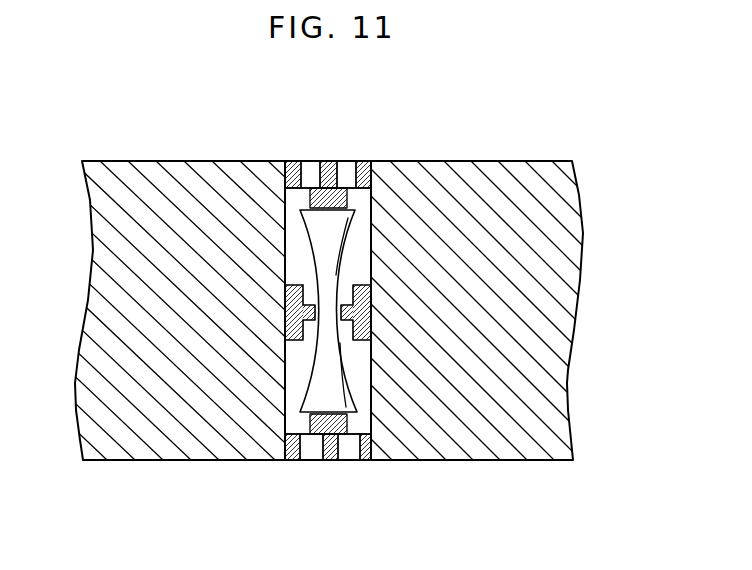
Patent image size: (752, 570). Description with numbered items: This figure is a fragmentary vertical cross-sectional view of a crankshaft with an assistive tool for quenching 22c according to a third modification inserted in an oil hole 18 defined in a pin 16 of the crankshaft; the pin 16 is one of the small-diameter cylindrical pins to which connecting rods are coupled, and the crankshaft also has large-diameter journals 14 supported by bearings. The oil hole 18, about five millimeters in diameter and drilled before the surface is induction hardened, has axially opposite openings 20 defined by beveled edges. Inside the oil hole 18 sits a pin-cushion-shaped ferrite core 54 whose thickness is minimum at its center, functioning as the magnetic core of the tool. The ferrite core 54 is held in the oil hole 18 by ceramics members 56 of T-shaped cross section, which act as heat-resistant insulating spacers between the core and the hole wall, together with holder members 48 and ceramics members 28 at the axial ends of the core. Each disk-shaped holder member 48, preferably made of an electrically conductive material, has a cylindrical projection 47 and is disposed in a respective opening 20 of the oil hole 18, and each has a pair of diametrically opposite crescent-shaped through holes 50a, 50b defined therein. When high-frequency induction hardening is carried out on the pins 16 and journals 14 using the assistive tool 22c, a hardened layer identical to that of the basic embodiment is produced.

The journal 14 is at (376, 270).
The pin 16 is at (160, 161).
The oil hole 18 is at (373, 260).
The opening 20 is at (301, 163).
The assistive tool for quenching 22c is at (372, 160).
The ceramics member 28 is at (347, 208).
The cylindrical projection 47 is at (307, 198).
The holder member 48 is at (323, 168).
The through hole 50a is at (310, 450).
The through hole 50b is at (345, 448).
The ferrite core 54 is at (333, 372).
The ceramics member 56 is at (287, 315).